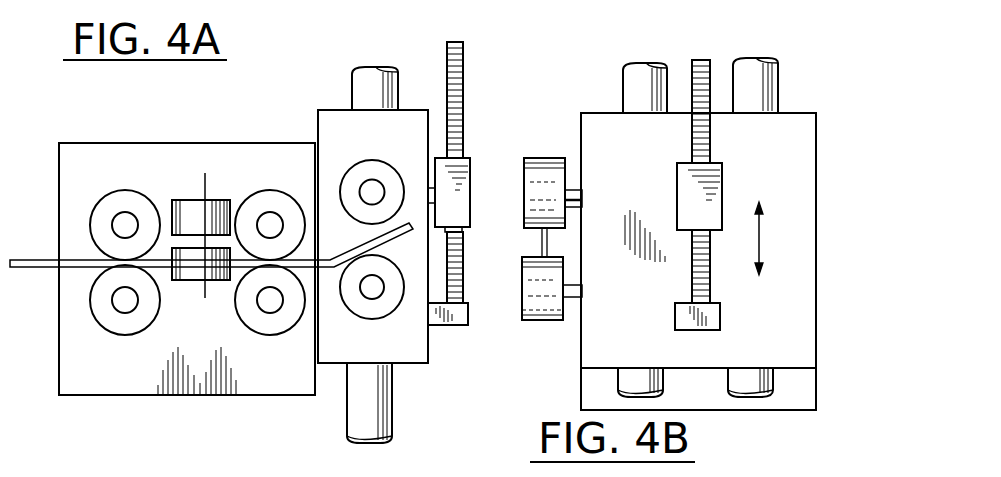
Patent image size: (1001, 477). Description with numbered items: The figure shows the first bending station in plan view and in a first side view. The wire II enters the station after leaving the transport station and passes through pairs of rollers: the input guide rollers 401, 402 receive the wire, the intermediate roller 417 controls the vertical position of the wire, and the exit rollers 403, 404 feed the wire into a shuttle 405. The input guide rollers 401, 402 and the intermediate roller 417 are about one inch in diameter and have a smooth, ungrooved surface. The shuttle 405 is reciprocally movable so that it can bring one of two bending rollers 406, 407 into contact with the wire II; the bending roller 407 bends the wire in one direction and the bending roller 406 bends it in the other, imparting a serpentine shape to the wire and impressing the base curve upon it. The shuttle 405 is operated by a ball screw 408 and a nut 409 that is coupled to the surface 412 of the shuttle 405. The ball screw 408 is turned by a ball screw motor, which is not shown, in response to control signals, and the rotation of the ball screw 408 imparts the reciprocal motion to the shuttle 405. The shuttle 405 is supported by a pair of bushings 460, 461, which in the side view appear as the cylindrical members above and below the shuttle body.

In FIG. 4A, the wire II is at (35, 256).
In FIG. 4B, the wire II is at (553, 240).
In FIG. 4A, the input guide roller 401 is at (133, 184).
In FIG. 4A, the input guide roller 402 is at (137, 337).
In FIG. 4A, the exit roller 403 is at (268, 190).
In FIG. 4A, the exit roller 404 is at (267, 334).
In FIG. 4A, the shuttle 405 is at (327, 95).
In FIG. 4B, the shuttle 405 is at (816, 150).
In FIG. 4A, the bending roller 406 is at (371, 172).
In FIG. 4B, the bending roller 406 is at (543, 157).
In FIG. 4A, the bending roller 407 is at (388, 315).
In FIG. 4B, the bending roller 407 is at (571, 308).
In FIG. 4A, the ball screw 408 is at (471, 80).
In FIG. 4B, the ball screw 408 is at (669, 154).
In FIG. 4A, the nut 409 is at (447, 68).
In FIG. 4B, the nut 409 is at (710, 137).
In FIG. 4B, the surface 412 is at (780, 347).
In FIG. 4A, the intermediate roller 417 is at (220, 280).
In FIG. 4A, the bushing 460 is at (399, 260).
In FIG. 4B, the bushing 460 is at (616, 388).
In FIG. 4B, the bushing 461 is at (777, 388).